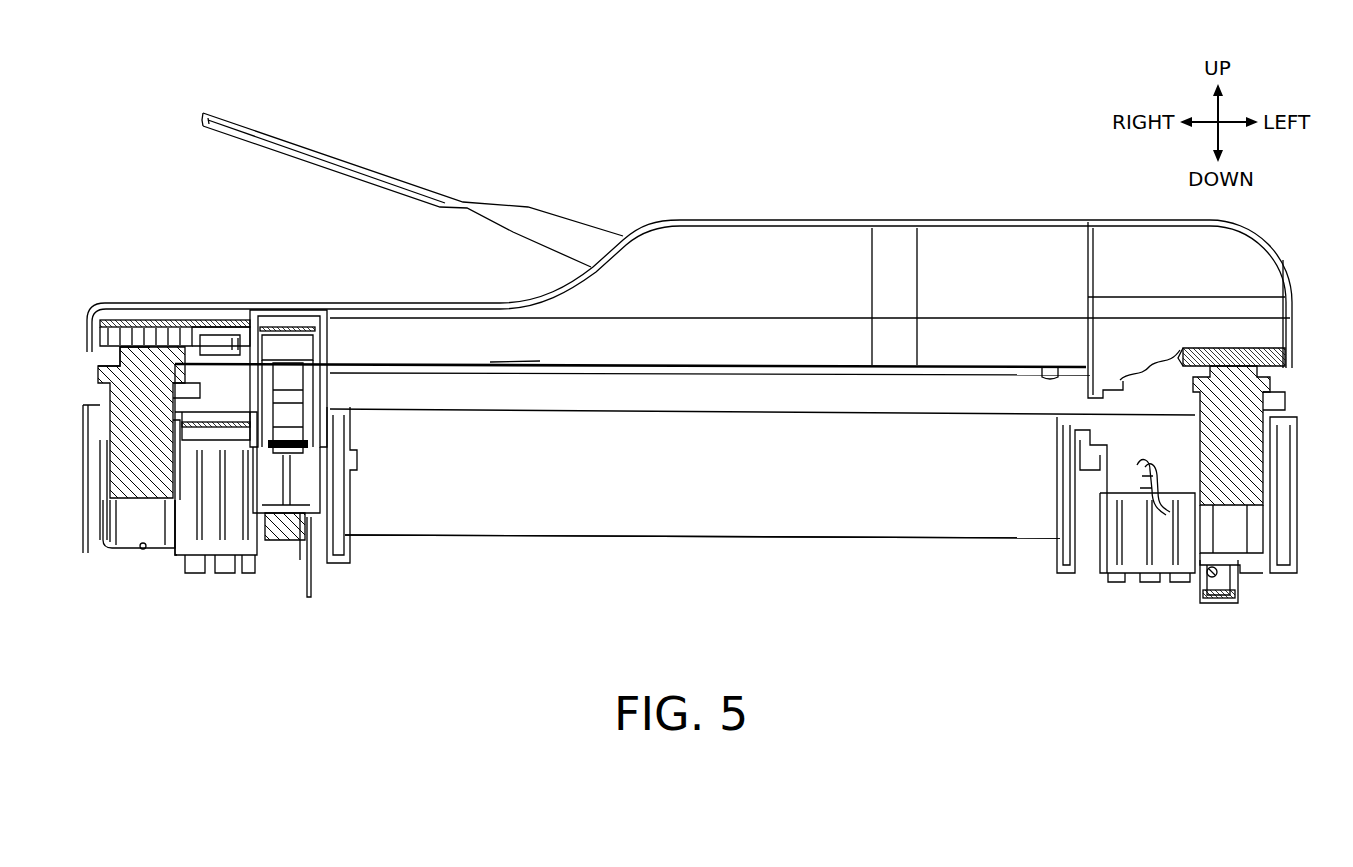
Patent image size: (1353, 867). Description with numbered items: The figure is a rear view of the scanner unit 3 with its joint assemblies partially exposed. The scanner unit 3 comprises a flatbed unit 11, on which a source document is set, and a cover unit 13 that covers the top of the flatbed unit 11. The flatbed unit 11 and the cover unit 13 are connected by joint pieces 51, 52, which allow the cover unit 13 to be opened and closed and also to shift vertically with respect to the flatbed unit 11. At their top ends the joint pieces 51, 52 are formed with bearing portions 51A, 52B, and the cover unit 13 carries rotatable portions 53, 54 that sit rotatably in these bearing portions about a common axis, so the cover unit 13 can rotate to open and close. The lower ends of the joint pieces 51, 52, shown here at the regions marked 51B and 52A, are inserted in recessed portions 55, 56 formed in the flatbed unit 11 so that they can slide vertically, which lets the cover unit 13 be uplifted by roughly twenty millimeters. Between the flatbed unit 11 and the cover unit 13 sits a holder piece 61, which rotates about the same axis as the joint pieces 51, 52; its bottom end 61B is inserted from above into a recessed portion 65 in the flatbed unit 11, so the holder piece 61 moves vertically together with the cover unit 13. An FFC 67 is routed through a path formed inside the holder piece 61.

The scanner unit 3 is at (1003, 191).
The flatbed unit 11 is at (1016, 540).
The cover unit 13 is at (1118, 216).
The joint piece 51 is at (92, 401).
The bearing portion 51A is at (97, 372).
The first hinge lower portion 51B is at (118, 550).
The joint piece 52 is at (1266, 408).
The second hinge upper portion 52A is at (1267, 384).
The bearing portion 52B is at (1245, 570).
The rotatable portion 53 is at (148, 355).
The rotatable portion 54 is at (1227, 372).
The recessed portion 55 is at (140, 548).
The recessed portion 56 is at (1232, 565).
The holder piece 61 is at (279, 312).
The bottom end 61B is at (282, 520).
The recessed portion 65 is at (296, 535).
The FFC 67 is at (302, 392).